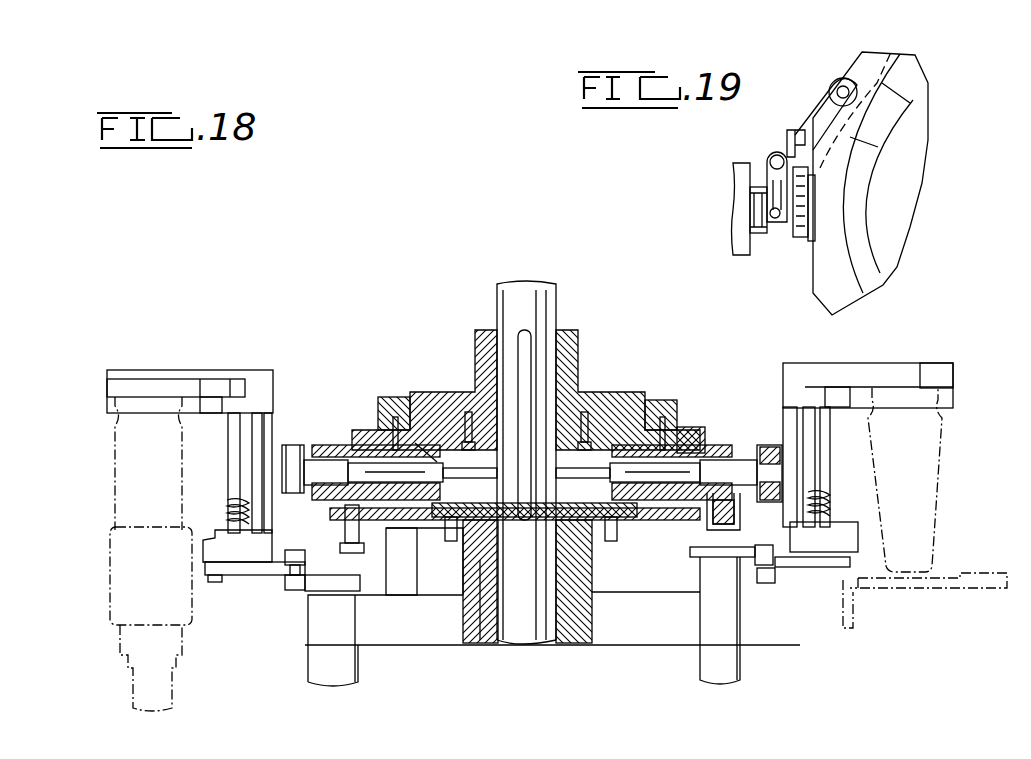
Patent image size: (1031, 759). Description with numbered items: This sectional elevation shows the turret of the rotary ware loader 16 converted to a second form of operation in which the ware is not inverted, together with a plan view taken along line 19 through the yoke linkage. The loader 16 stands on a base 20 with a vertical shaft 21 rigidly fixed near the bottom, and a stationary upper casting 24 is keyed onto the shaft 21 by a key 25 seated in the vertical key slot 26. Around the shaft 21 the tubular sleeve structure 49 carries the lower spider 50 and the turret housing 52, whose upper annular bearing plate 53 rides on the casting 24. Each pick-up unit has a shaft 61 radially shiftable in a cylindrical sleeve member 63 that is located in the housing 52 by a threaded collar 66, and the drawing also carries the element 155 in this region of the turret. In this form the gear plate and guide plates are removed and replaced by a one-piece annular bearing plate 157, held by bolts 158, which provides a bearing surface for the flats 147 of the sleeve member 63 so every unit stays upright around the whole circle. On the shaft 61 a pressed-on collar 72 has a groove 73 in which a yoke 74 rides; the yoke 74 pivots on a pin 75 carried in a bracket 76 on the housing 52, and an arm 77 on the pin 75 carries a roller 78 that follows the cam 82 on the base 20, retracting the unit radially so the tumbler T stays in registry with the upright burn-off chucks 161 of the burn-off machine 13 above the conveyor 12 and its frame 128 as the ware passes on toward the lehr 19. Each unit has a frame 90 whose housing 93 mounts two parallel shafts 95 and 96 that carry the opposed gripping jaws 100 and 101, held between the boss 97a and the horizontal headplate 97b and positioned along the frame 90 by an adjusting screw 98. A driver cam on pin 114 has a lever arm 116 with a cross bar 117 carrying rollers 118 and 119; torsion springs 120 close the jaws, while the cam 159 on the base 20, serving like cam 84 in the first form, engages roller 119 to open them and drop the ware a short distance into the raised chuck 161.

In FIG. 18, the conveyor 12 is at (940, 575).
In FIG. 18, the burn-off machine 13 is at (155, 694).
In FIG. 18, the rotary ware loader 16 is at (477, 326).
In FIG. 18, the lehr 19 is at (340, 354).
In FIG. 18, the base 20 is at (322, 650).
In FIG. 18, the vertical shaft 21 is at (532, 599).
In FIG. 18, the upper casting 24 is at (592, 393).
In FIG. 19, the upper casting 24 is at (905, 196).
In FIG. 18, the key 25 is at (532, 345).
In FIG. 18, the vertical key slot 26 is at (524, 512).
In FIG. 18, the sleeve structure 49 is at (585, 580).
In FIG. 18, the lower spider 50 is at (644, 520).
In FIG. 18, the housing 52 is at (760, 445).
In FIG. 19, the housing 52 is at (825, 304).
In FIG. 18, the upper annular bearing plate 53 is at (380, 406).
In FIG. 19, the upper annular bearing plate 53 is at (865, 257).
In FIG. 18, the shaft 61 is at (336, 481).
In FIG. 19, the shaft 61 is at (796, 240).
In FIG. 18, the cylindrical sleeve member 63 is at (712, 430).
In FIG. 18, the threaded collar 66 is at (740, 500).
In FIG. 19, the threaded collar 66 is at (809, 243).
In FIG. 19, the pressed-on collar 72 is at (752, 218).
In FIG. 19, the groove 73 is at (770, 225).
In FIG. 18, the yoke 74 is at (295, 447).
In FIG. 19, the yoke 74 is at (768, 160).
In FIG. 19, the pin 75 is at (772, 156).
In FIG. 19, the bracket 76 is at (791, 130).
In FIG. 18, the arm 77 is at (296, 522).
In FIG. 19, the arm 77 is at (828, 120).
In FIG. 18, the roller 78 is at (350, 545).
In FIG. 19, the roller 78 is at (840, 78).
In FIG. 18, the cam 82 is at (402, 532).
In FIG. 19, the cam 82 is at (880, 80).
In FIG. 18, the cam 84 is at (716, 548).
In FIG. 18, the frame 90 is at (783, 427).
In FIG. 19, the frame 90 is at (733, 204).
In FIG. 18, the housing 93 is at (836, 550).
In FIG. 18, the shaft 95 is at (820, 455).
In FIG. 18, the shaft 96 is at (228, 456).
In FIG. 18, the boss 97a is at (218, 410).
In FIG. 18, the horizontal headplate 97b is at (172, 374).
In FIG. 18, the adjusting screw 98 is at (272, 428).
In FIG. 18, the gripping jaw 100 is at (938, 366).
In FIG. 18, the gripping jaw 101 is at (107, 385).
In FIG. 18, the pin 114 is at (215, 583).
In FIG. 18, the lever arm 116 is at (256, 576).
In FIG. 18, the cross bar 117 is at (758, 572).
In FIG. 18, the roller 118 is at (756, 543).
In FIG. 18, the roller 119 is at (292, 592).
In FIG. 18, the torsion spring 120 is at (232, 508).
In FIG. 18, the conveyor frame 128 is at (903, 592).
In FIG. 18, the flats 147 is at (396, 417).
In FIG. 18, the plate 155 is at (515, 501).
In FIG. 18, the one-piece annular bearing plate 157 is at (440, 425).
In FIG. 18, the bolts 158 is at (449, 453).
In FIG. 18, the cam 159 is at (326, 590).
In FIG. 18, the burn-off chucks 161 is at (125, 588).
In FIG. 18, the tumbler T is at (125, 462).